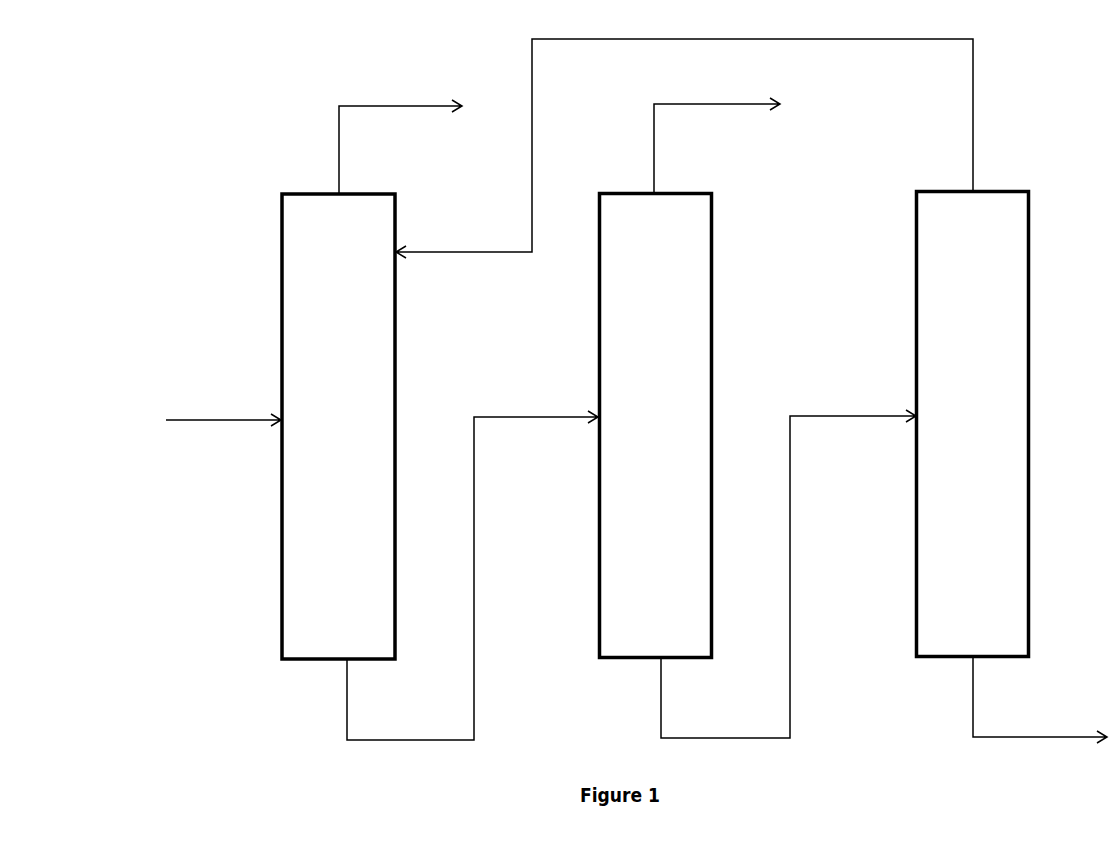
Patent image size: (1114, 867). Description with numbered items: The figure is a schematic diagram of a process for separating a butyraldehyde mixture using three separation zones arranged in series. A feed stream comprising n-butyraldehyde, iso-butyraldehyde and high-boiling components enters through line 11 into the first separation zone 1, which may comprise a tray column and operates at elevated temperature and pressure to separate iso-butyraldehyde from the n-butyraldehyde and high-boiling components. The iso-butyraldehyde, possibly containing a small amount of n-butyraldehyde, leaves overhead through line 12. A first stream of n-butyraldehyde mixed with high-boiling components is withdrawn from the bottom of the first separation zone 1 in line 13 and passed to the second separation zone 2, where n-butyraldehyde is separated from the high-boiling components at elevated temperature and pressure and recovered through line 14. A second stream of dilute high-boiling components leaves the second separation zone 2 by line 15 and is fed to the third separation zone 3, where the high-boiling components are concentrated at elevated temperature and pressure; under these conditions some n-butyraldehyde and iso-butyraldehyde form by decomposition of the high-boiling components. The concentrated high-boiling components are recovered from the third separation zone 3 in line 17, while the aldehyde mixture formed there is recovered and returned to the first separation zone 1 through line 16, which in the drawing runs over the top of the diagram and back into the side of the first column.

The first separation zone 1 is at (338, 426).
The second separation zone 2 is at (656, 426).
The third separation zone 3 is at (973, 424).
The line 11 is at (223, 408).
The line 12 is at (400, 135).
The line 13 is at (472, 591).
The line 14 is at (717, 133).
The line 15 is at (788, 589).
The line 16 is at (705, 148).
The line 17 is at (1040, 712).